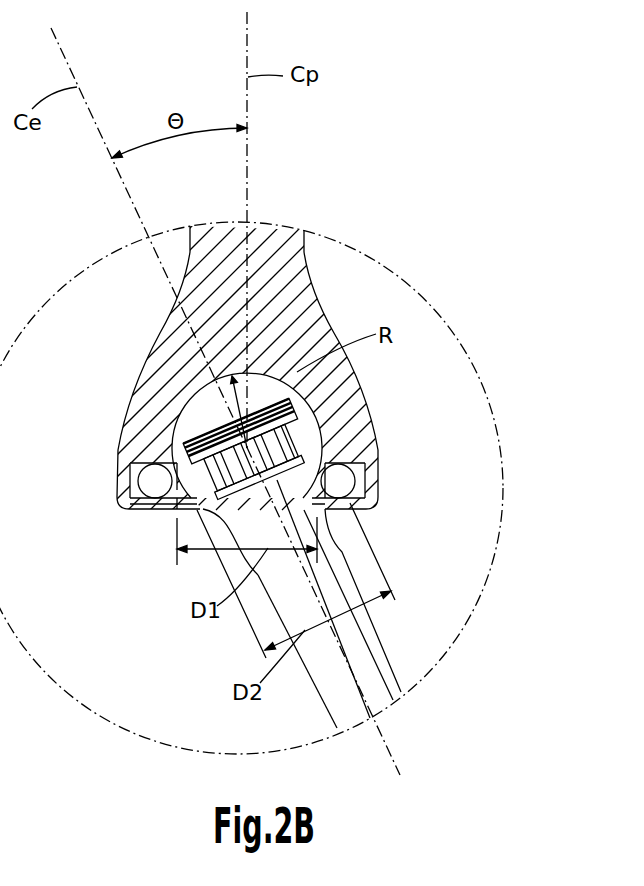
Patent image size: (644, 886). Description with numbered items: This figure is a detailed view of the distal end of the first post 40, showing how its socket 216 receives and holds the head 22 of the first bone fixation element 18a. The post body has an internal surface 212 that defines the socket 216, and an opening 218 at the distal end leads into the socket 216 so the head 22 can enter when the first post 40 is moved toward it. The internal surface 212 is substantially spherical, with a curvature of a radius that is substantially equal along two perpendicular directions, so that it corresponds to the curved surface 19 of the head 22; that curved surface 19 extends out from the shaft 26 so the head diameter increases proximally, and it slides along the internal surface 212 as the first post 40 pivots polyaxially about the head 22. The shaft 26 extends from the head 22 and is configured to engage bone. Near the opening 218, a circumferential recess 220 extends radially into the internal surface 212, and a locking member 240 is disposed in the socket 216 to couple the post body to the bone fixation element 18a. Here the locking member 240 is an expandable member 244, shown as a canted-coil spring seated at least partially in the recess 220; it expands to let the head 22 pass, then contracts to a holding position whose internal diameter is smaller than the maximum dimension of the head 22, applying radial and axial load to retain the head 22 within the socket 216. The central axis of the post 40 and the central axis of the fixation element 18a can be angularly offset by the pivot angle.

The first post 40 is at (63, 262).
The internal surface 212 is at (172, 415).
The socket 216 is at (207, 400).
The expandable member 244 is at (157, 483).
The locking member 240 is at (353, 461).
The circumferential recess 220 is at (378, 464).
The head 22 is at (197, 482).
The opening 218 is at (177, 513).
The curved surface 19 is at (200, 512).
The first bone fixation element 18a is at (383, 628).
The shaft 26 is at (350, 702).